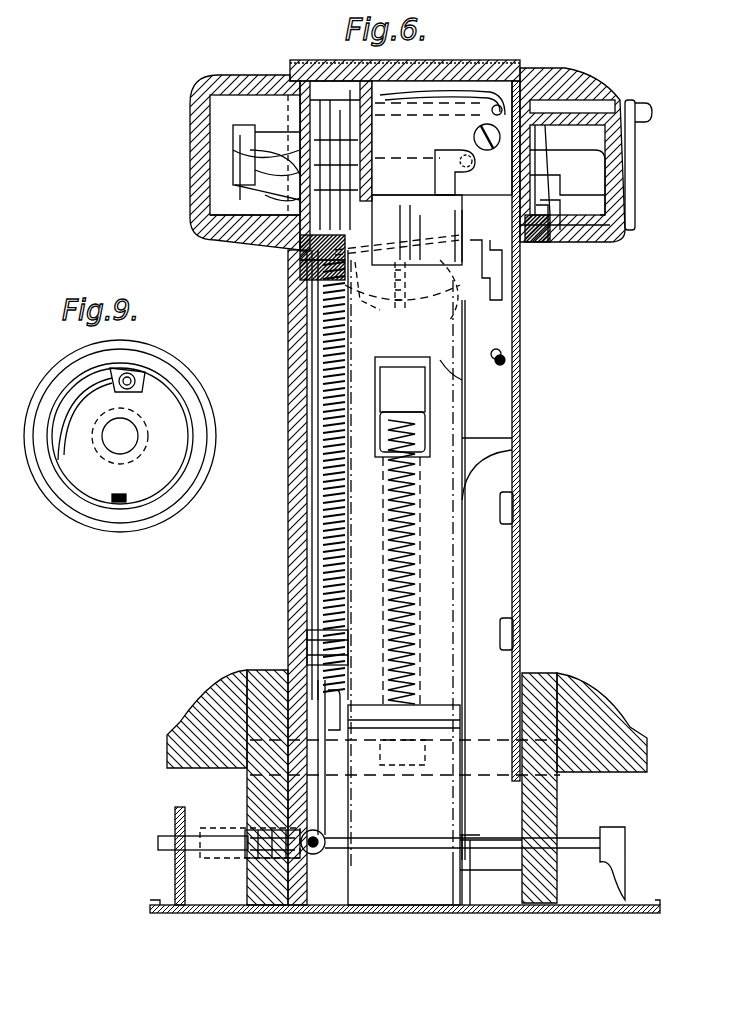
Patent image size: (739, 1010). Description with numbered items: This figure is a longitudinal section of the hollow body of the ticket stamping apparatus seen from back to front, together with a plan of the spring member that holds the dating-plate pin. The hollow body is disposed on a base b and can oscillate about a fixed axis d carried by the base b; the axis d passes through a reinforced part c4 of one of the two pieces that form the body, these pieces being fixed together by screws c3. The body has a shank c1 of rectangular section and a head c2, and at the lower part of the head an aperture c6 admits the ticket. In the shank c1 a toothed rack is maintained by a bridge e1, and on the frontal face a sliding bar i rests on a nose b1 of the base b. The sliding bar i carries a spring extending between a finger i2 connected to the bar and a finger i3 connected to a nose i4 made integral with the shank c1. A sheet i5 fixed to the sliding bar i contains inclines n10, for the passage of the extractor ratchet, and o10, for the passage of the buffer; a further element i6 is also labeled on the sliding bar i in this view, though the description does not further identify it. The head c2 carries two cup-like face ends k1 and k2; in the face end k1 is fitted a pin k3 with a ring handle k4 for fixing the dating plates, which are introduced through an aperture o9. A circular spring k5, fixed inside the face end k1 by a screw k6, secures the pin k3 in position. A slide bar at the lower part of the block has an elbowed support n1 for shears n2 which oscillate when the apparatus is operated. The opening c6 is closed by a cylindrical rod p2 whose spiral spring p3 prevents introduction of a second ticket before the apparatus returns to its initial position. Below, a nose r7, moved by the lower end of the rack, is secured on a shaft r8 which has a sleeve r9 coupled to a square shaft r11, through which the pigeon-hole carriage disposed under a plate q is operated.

In FIG. 6, the aperture o9 is at (446, 78).
In FIG. 6, the pin k3 is at (572, 108).
In FIG. 6, the ring handle k4 is at (262, 160).
In FIG. 6, the face end k2 is at (250, 215).
In FIG. 6, the aperture c6 is at (300, 247).
In FIG. 6, the head c2 is at (300, 268).
In FIG. 6, the cylindrical rod p2 is at (305, 268).
In FIG. 6, the shears n2 is at (330, 310).
In FIG. 6, the spiral spring p3 is at (410, 318).
In FIG. 6, the screw k6 is at (548, 230).
In FIG. 9, the screw k6 is at (126, 500).
In FIG. 6, the face end k1 is at (560, 225).
In FIG. 9, the face end k1 is at (185, 376).
In FIG. 6, the circular spring k5 is at (542, 200).
In FIG. 9, the circular spring k5 is at (78, 492).
In FIG. 6, the incline n10 is at (522, 300).
In FIG. 6, the incline o10 is at (505, 325).
In FIG. 6, the pin i6 is at (520, 360).
In FIG. 6, the elbowed support n1 is at (462, 378).
In FIG. 6, the nose i4 is at (415, 398).
In FIG. 6, the finger i3 is at (415, 432).
In FIG. 6, the sheet i5 is at (498, 438).
In FIG. 6, the shank c1 is at (290, 485).
In FIG. 6, the screws c3 is at (513, 505).
In FIG. 6, the sliding bar i is at (445, 597).
In FIG. 6, the finger i2 is at (410, 668).
In FIG. 6, the bridge e1 is at (310, 645).
In FIG. 6, the base b is at (575, 705).
In FIG. 6, the fixed axis d is at (562, 770).
In FIG. 6, the reinforced part c4 is at (482, 820).
In FIG. 6, the square shaft r11 is at (195, 838).
In FIG. 6, the sleeve r9 is at (268, 858).
In FIG. 6, the nose r7 is at (313, 855).
In FIG. 6, the shaft r8 is at (380, 850).
In FIG. 6, the nose b1 is at (404, 888).
In FIG. 6, the plate q is at (455, 880).